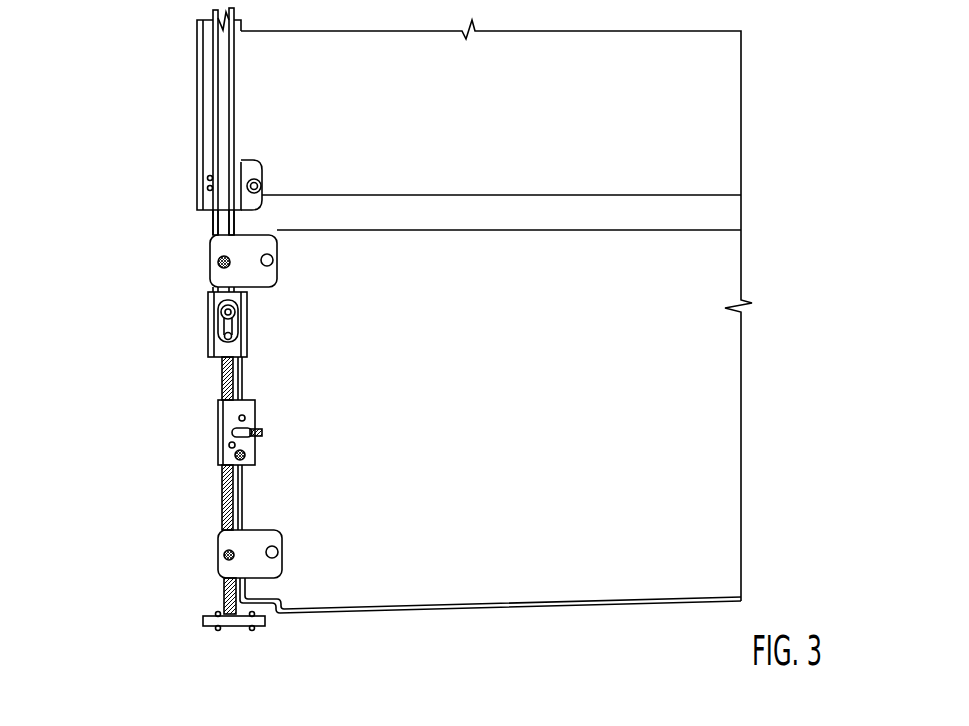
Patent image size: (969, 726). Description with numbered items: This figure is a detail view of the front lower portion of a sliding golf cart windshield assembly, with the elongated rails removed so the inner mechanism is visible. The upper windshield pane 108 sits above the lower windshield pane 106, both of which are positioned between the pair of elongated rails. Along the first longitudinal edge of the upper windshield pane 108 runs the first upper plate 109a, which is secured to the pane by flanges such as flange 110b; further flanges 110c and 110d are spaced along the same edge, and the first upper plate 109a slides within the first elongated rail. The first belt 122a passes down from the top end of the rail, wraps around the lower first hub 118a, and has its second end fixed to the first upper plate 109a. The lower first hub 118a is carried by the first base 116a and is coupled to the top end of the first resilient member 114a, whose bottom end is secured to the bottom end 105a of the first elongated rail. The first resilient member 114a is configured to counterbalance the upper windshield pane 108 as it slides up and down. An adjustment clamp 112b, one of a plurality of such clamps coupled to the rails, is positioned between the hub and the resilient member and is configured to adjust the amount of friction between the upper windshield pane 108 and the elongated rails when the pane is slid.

The upper windshield pane 108 is at (712, 110).
The lower windshield pane 106 is at (560, 580).
The first upper plate 109a is at (197, 112).
The flange 110b is at (258, 172).
The first belt 122a is at (212, 228).
The flange 110c is at (272, 278).
The lower first hub 118a is at (222, 320).
The first base 116a is at (208, 350).
The adjustment clamp 112b is at (250, 408).
The first resilient member 114a is at (222, 495).
The flange 110d is at (278, 540).
The bottom end of first elongated rail 105a is at (218, 626).